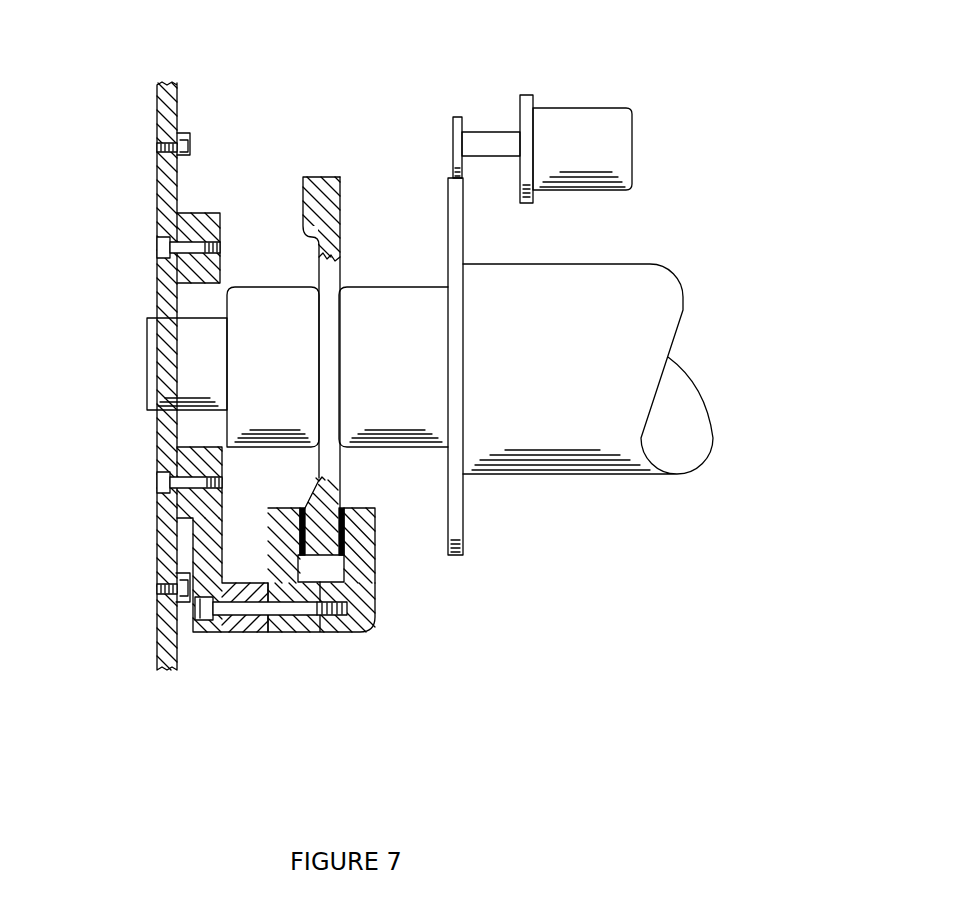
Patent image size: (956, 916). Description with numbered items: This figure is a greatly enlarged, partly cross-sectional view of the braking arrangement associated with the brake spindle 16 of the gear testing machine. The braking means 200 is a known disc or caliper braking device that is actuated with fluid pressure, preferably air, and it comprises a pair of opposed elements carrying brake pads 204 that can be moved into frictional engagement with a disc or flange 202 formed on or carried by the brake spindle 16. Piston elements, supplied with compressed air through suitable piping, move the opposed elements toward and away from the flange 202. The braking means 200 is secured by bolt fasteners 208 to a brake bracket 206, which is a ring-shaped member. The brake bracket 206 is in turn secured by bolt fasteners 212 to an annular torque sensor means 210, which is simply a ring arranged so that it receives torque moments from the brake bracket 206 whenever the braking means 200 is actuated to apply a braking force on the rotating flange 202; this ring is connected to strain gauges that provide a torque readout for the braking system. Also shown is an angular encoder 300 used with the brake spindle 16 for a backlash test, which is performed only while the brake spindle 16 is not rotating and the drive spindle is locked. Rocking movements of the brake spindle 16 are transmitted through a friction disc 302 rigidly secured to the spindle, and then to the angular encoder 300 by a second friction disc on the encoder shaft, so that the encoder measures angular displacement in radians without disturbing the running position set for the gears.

The brake spindle means 16 is at (430, 369).
The braking means 200 is at (367, 565).
The flange 202 is at (372, 598).
The brake pads 204 is at (302, 510).
The brake bracket 206 is at (225, 625).
The bolt fasteners 208 is at (290, 610).
The torque sensor means 210 is at (180, 182).
The bolt fasteners 212 is at (160, 245).
The angular encoder 300 is at (580, 125).
The friction disc 302 is at (455, 238).